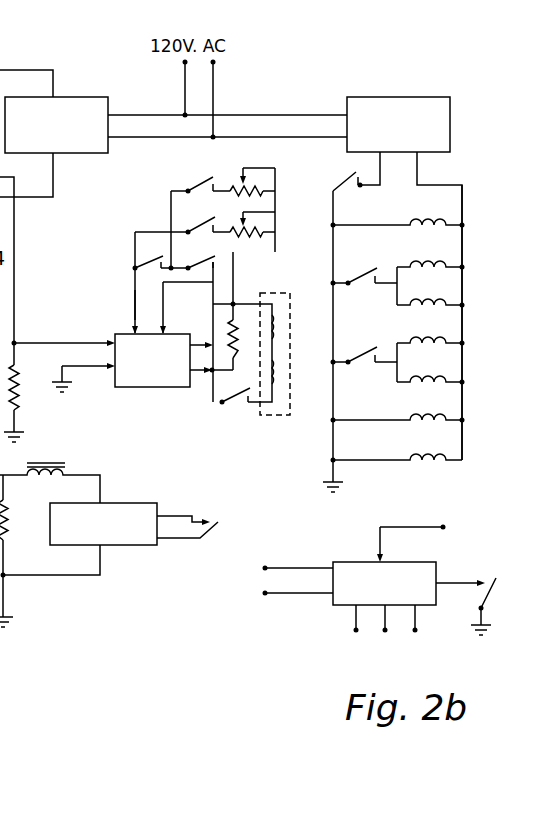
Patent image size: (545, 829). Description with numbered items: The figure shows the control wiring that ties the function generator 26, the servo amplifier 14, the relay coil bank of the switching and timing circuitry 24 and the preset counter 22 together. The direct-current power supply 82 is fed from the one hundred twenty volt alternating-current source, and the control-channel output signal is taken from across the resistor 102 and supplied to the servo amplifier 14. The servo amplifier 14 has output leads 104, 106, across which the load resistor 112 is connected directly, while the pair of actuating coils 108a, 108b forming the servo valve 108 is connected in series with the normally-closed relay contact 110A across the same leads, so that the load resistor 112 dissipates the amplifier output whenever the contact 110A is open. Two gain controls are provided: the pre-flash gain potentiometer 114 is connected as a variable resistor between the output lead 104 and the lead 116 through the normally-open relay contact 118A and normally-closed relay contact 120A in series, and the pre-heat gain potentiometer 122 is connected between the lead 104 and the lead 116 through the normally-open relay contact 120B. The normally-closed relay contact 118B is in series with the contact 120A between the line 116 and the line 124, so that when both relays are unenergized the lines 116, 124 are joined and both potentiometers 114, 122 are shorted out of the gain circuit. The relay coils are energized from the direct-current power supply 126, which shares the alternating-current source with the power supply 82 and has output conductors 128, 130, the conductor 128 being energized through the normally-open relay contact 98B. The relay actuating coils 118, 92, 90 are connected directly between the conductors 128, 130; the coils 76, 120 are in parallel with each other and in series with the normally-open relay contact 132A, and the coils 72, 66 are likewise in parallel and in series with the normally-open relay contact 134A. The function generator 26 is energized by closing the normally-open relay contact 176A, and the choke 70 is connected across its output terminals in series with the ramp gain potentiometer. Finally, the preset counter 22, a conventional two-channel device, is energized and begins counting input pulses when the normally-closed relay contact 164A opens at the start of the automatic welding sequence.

The power supply 82 is at (96, 96).
The power supply 126 is at (413, 98).
The switching and timing circuitry 24 is at (406, 59).
The normally-open relay contact 98B is at (348, 183).
The output conductor 128 is at (336, 280).
The output conductor 130 is at (462, 252).
The relay actuating coil 118 is at (447, 208).
The normally-open relay contact 132A is at (361, 273).
The relay coil 76 is at (422, 262).
The relay coil 120 is at (418, 300).
The normally-open relay contact 134A is at (361, 352).
The relay coil 72 is at (423, 339).
The relay coil 66 is at (420, 378).
The relay actuating coil 92 is at (423, 416).
The relay actuating coil 90 is at (423, 456).
The normally-open relay contact 118A is at (207, 184).
The pre-flash gain potentiometer 114 is at (252, 188).
The normally-open relay contact 120B is at (198, 224).
The pre-heat gain potentiometer 122 is at (265, 234).
The normally-closed relay contact 120A is at (151, 262).
The normally-closed relay contact 118B is at (191, 266).
The lead 116 is at (135, 294).
The line 124 is at (163, 290).
The output lead 104 is at (211, 333).
The load resistor 112 is at (232, 346).
The normally-closed relay contact 110A is at (238, 398).
The output lead 106 is at (212, 388).
The servo valve 108 is at (289, 415).
The actuating coil 108a is at (280, 325).
The actuating coil 108b is at (280, 381).
The servo amplifier 14 is at (148, 388).
The resistor 102 is at (21, 390).
The choke 70 is at (68, 472).
The function generator 26 is at (131, 503).
The normally-open relay contact 176A is at (216, 532).
The preset counter 22 is at (352, 562).
The normally-closed relay contact 164A is at (486, 598).